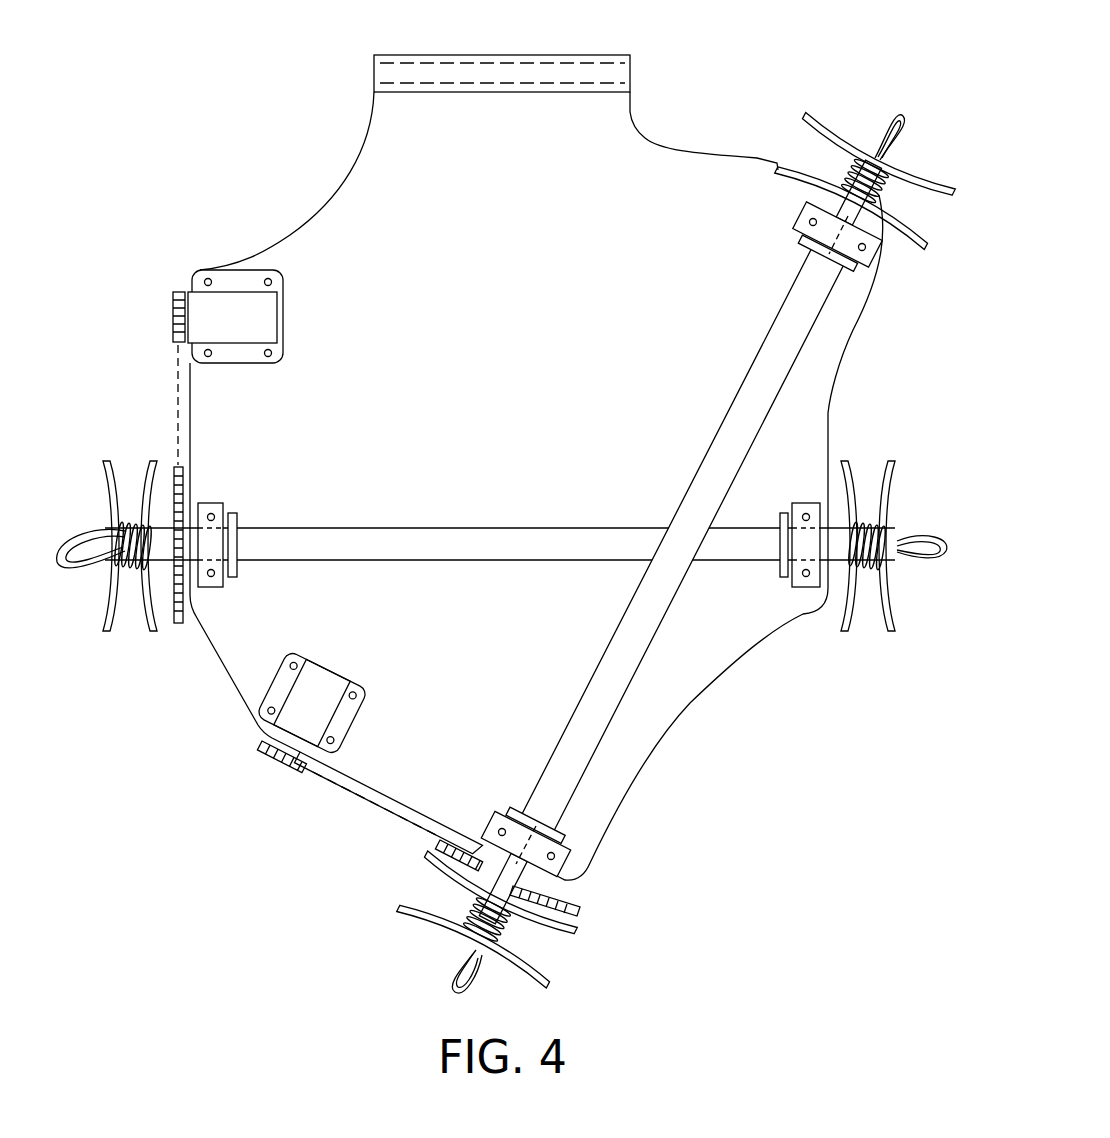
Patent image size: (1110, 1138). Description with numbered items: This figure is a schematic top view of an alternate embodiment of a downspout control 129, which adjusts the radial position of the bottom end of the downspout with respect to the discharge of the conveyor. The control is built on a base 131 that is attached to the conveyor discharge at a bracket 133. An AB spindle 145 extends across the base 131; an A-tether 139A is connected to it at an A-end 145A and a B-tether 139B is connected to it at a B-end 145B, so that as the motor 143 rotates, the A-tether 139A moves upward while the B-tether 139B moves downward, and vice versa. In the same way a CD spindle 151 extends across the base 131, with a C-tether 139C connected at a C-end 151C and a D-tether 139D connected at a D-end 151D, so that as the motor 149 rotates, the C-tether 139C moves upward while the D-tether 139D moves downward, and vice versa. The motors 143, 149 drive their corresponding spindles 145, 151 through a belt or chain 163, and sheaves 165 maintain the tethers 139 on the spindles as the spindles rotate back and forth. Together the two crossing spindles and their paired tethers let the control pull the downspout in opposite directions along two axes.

The downspout control 129 is at (790, 44).
The base 131 is at (655, 125).
The bracket 133 is at (374, 62).
The motor 143 is at (232, 293).
The AB spindle 145 is at (330, 525).
The A-end 145A is at (92, 568).
The B-end 145B is at (893, 523).
The tethers 139 is at (458, 922).
The A-tether 139A is at (132, 522).
The B-tether 139B is at (862, 575).
The C-tether 139C is at (530, 922).
The D-tether 139D is at (928, 246).
The motor 149 is at (262, 745).
The CD spindle 151 is at (728, 422).
The C-end 151C is at (455, 940).
The D-end 151D is at (857, 155).
The belt or chain 163 is at (370, 803).
The sheaves 165 is at (550, 975).